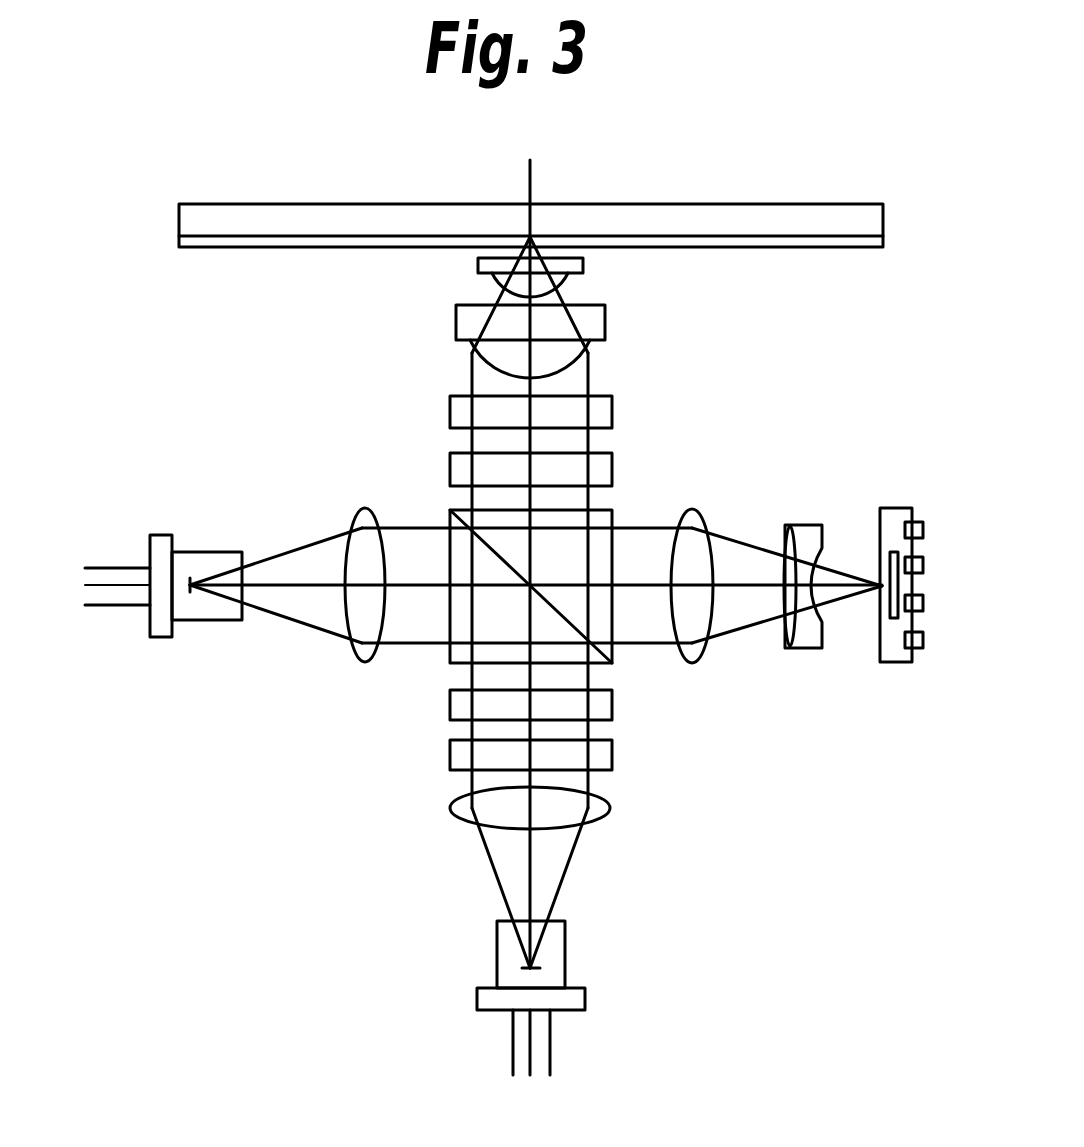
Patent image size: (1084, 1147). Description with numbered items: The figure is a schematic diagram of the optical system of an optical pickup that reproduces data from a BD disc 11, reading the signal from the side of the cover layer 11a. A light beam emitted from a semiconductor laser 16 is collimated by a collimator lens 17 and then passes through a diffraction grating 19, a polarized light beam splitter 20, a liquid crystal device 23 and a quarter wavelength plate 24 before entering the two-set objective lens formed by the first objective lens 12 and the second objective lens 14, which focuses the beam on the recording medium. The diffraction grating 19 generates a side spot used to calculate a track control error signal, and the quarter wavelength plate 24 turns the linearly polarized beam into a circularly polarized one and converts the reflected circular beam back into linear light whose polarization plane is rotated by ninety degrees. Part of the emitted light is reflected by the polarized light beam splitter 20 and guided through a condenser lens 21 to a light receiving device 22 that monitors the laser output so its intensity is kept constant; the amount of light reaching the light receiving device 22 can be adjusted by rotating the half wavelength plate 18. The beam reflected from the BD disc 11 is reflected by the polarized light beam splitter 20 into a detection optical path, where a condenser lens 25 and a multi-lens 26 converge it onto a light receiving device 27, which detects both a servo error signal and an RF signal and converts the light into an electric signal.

The BD disc 11 is at (792, 204).
The cover layer 11a is at (805, 248).
The first objective lens 12 is at (583, 265).
The second objective lens 14 is at (605, 322).
The semiconductor laser 16 is at (565, 955).
The collimator lens 17 is at (608, 812).
The 1/2 wavelength plate 18 is at (450, 750).
The diffraction grating 19 is at (450, 705).
The polarized light beam splitter 20 is at (603, 624).
The condenser lens 21 is at (362, 522).
The light receiving device 22 is at (210, 552).
The liquid crystal device 23 is at (612, 466).
The 1/4 wavelength plate 24 is at (612, 410).
The condenser lens 25 is at (690, 663).
The multi-lens 26 is at (800, 648).
The light receiving device 27 is at (895, 662).